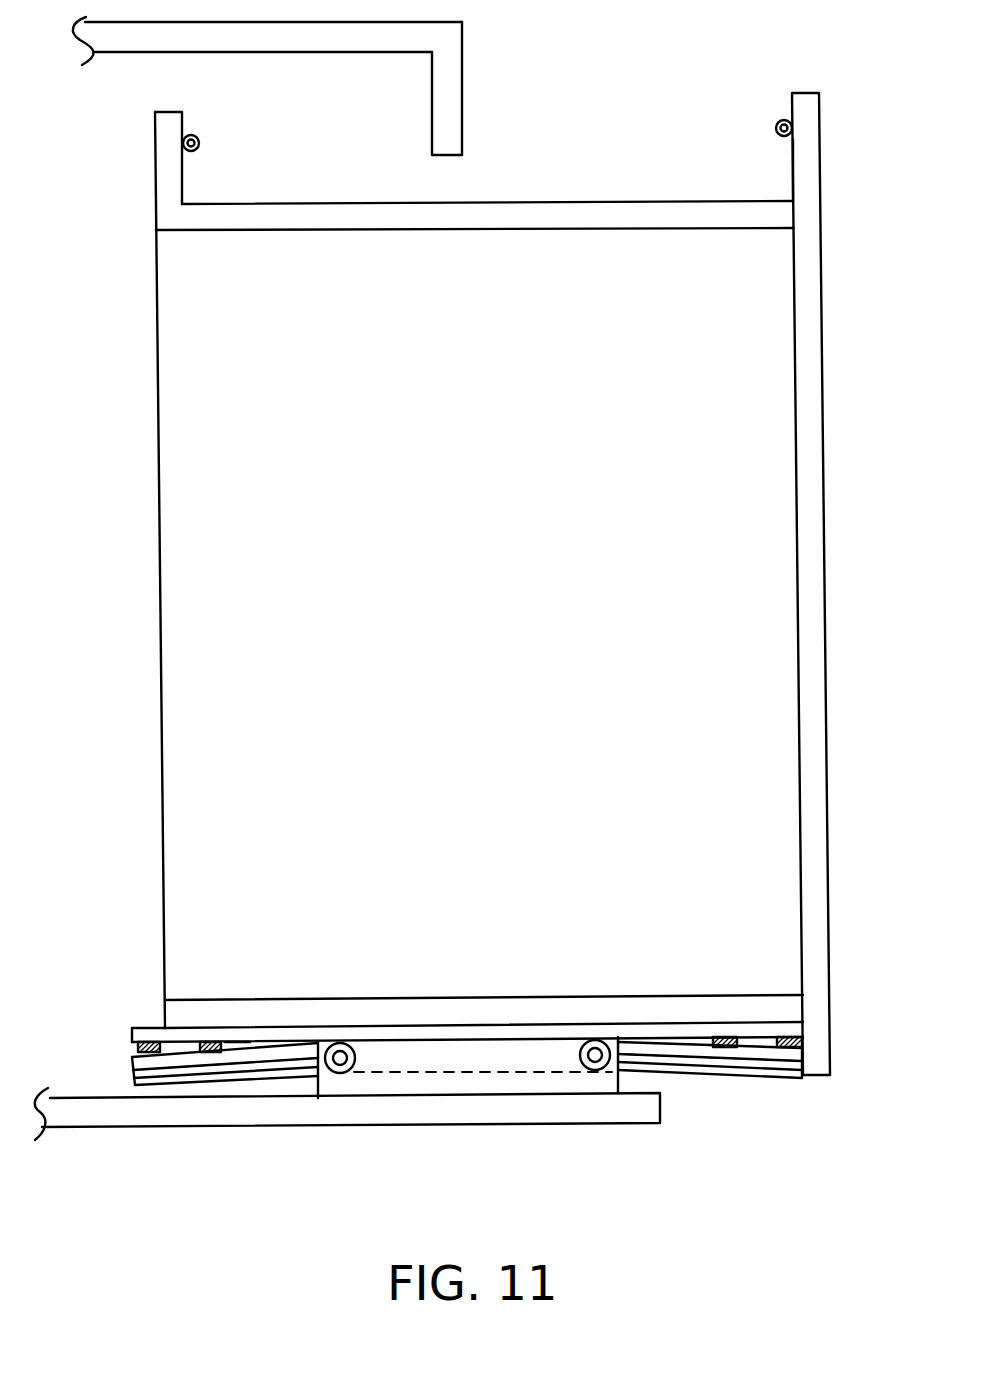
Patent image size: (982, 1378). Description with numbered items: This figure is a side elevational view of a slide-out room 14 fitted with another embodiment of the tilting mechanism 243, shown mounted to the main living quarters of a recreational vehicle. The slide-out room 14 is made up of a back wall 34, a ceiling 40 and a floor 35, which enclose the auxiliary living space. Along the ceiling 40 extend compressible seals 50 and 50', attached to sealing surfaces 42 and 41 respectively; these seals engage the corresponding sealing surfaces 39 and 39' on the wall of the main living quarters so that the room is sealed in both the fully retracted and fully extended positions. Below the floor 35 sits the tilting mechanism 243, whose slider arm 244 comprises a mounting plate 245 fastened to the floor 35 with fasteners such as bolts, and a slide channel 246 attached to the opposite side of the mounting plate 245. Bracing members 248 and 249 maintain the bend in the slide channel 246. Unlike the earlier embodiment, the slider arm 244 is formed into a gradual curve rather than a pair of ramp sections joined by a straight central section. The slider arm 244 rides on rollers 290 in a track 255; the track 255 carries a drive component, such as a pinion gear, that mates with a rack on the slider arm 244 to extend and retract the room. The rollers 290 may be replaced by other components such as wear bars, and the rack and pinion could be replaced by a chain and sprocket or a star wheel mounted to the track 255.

The slide-out room 14 is at (128, 741).
The back wall 34 is at (808, 527).
The floor 35 is at (615, 995).
The sealing surface 39 is at (414, 99).
The sealing surface 39' is at (308, 53).
The ceiling 40 is at (575, 202).
The sealing surface 41 is at (793, 186).
The sealing surface 42 is at (183, 203).
The compressible seal 50 is at (211, 112).
The compressible seal 50' is at (758, 89).
The tilting mechanism 243 is at (673, 1080).
The slider arm 244 is at (238, 1039).
The mounting plate 245 is at (178, 1032).
The slide channel 246 is at (219, 1066).
The bracing member 248 is at (138, 1048).
The bracing member 249 is at (184, 1048).
The track 255 is at (418, 1056).
The roller 290 is at (353, 1048).